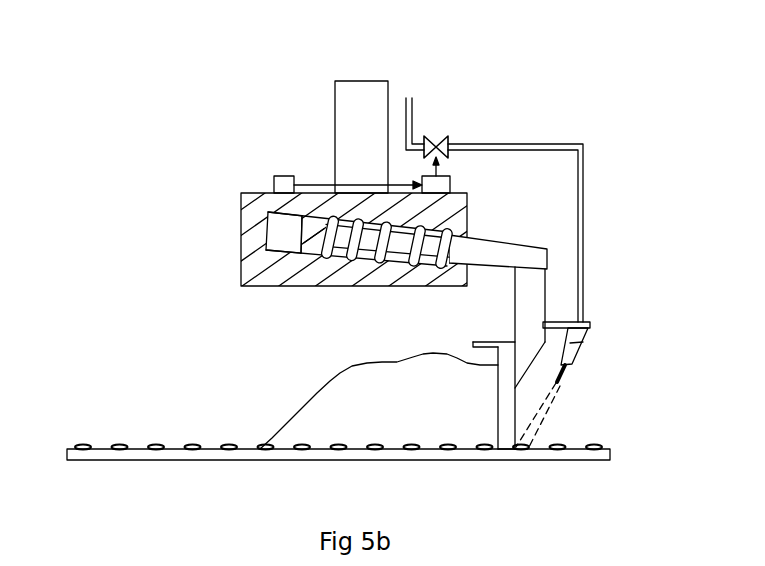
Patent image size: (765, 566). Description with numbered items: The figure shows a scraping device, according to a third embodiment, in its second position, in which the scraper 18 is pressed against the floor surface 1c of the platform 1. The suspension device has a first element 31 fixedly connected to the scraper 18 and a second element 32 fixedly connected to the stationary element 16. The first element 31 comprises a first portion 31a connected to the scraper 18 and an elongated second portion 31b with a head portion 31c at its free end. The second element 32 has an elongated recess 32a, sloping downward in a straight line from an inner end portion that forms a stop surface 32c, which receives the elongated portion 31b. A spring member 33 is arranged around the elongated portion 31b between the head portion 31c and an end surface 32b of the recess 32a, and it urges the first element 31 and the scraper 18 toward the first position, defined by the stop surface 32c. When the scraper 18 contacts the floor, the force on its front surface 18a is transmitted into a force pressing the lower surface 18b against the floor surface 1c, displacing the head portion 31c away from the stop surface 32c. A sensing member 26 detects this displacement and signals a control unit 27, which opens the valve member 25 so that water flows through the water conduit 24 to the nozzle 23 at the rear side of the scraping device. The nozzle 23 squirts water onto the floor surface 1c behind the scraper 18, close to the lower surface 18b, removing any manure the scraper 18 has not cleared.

The platform 1 is at (118, 452).
The floor surface 1c is at (157, 446).
The stationary element 16 is at (362, 113).
The scraper 18 is at (505, 418).
The front surface 18a is at (497, 403).
The lower surface 18b is at (505, 449).
The nozzle 23 is at (575, 353).
The water conduit 24 is at (543, 143).
The valve member 25 is at (440, 136).
The sensing member 26 is at (285, 176).
The control unit 27 is at (433, 184).
The first element 31 is at (550, 250).
The first portion 31a is at (533, 295).
The elongated second portion 31b is at (480, 253).
The head portion 31c is at (301, 253).
The second element 32 is at (253, 210).
The elongated recess 32a is at (341, 256).
The end surface 32b is at (443, 266).
The stop surface 32c is at (265, 230).
The spring member 33 is at (313, 228).